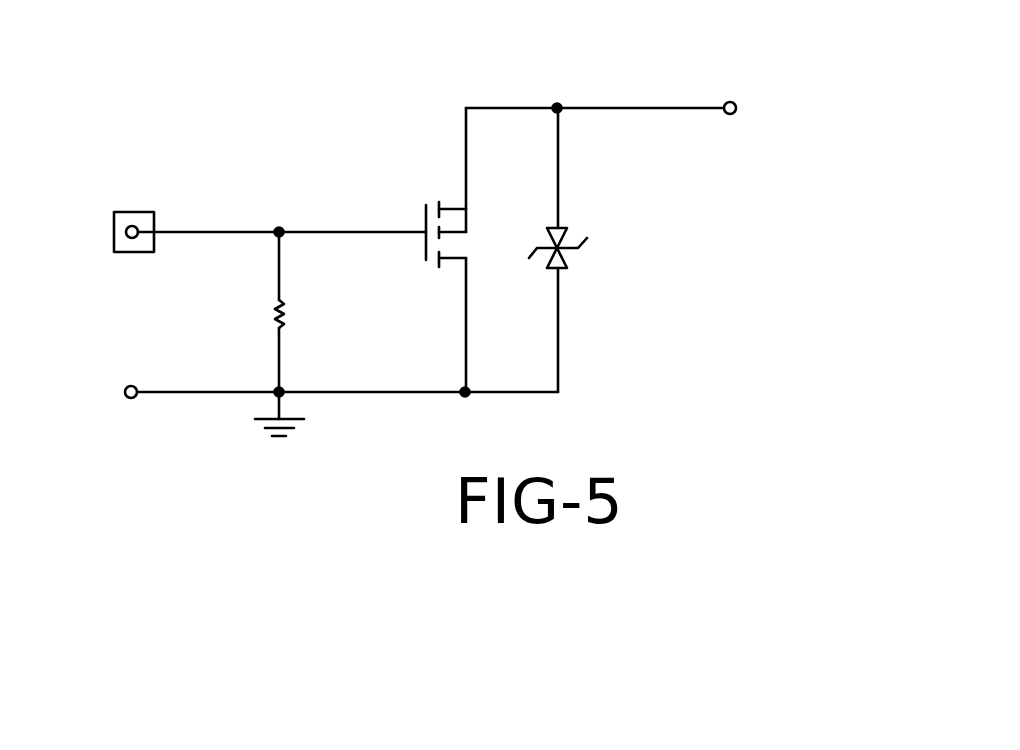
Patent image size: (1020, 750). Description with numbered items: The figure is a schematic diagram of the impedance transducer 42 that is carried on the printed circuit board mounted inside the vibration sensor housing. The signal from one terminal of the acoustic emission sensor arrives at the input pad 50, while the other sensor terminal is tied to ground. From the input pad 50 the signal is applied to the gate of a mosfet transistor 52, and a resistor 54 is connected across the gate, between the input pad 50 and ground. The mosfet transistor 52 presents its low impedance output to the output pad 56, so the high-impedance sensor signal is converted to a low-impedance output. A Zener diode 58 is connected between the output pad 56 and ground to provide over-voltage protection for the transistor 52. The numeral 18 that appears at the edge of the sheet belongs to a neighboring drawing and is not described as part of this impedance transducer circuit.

The impedance transducer 42 is at (288, 81).
The input pad 50 is at (122, 210).
The mosfet transistor 52 is at (427, 262).
The resistor 54 is at (275, 318).
The output pad 56 is at (728, 100).
The Zener diode 58 is at (568, 267).
The element of adjacent figure (partial) 18 is at (460, 745).